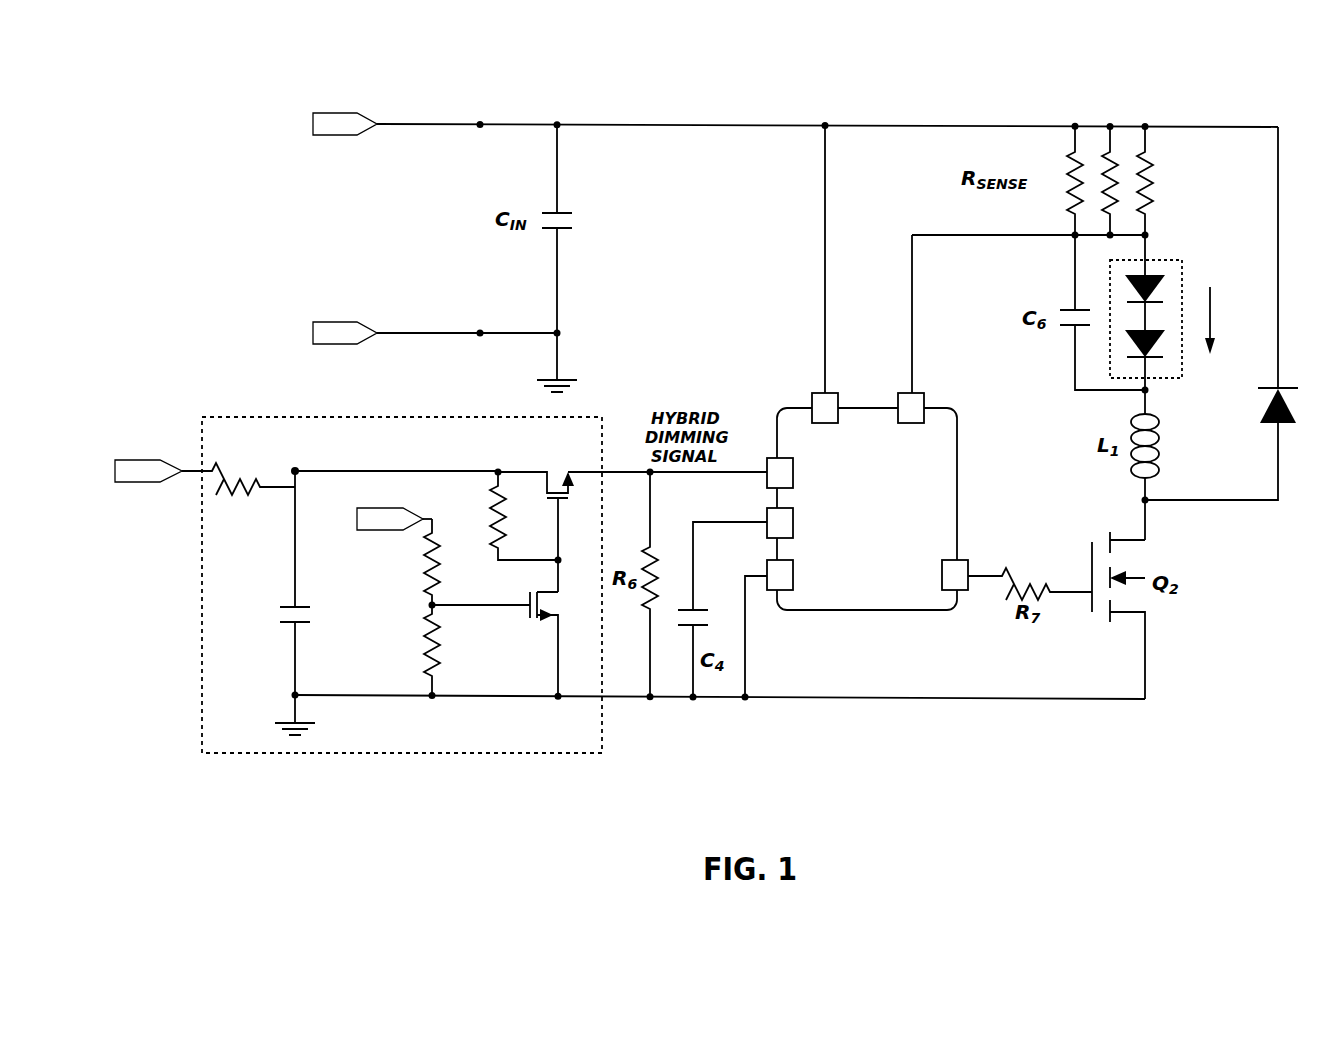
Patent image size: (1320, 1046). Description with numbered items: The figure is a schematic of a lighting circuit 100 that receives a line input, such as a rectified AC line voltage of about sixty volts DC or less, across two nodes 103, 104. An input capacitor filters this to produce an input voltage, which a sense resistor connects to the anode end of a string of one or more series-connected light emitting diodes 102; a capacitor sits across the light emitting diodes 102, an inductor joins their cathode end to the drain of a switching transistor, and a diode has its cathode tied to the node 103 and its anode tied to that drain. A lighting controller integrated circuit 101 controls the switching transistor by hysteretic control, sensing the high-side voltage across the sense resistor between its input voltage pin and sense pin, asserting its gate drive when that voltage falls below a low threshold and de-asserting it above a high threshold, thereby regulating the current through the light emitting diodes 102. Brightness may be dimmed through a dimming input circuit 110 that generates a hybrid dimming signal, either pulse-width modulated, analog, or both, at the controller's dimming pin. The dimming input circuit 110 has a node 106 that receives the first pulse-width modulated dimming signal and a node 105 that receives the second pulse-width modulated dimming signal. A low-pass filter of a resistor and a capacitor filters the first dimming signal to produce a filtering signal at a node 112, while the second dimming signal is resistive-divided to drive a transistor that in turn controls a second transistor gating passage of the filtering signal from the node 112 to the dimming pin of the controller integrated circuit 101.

The lighting circuit 100 is at (190, 193).
The lighting controller integrated circuit 101 is at (772, 420).
The LEDs 102 is at (1182, 278).
The node 103 is at (347, 118).
The node 104 is at (343, 338).
The node 105 is at (377, 523).
The node 106 is at (137, 478).
The dimming input circuit 110 is at (355, 755).
The node 112 is at (297, 467).